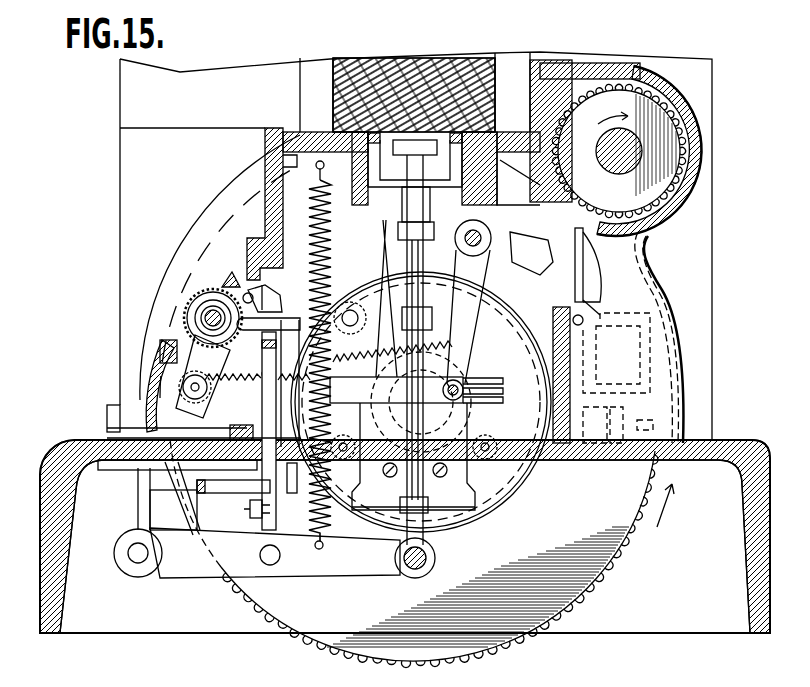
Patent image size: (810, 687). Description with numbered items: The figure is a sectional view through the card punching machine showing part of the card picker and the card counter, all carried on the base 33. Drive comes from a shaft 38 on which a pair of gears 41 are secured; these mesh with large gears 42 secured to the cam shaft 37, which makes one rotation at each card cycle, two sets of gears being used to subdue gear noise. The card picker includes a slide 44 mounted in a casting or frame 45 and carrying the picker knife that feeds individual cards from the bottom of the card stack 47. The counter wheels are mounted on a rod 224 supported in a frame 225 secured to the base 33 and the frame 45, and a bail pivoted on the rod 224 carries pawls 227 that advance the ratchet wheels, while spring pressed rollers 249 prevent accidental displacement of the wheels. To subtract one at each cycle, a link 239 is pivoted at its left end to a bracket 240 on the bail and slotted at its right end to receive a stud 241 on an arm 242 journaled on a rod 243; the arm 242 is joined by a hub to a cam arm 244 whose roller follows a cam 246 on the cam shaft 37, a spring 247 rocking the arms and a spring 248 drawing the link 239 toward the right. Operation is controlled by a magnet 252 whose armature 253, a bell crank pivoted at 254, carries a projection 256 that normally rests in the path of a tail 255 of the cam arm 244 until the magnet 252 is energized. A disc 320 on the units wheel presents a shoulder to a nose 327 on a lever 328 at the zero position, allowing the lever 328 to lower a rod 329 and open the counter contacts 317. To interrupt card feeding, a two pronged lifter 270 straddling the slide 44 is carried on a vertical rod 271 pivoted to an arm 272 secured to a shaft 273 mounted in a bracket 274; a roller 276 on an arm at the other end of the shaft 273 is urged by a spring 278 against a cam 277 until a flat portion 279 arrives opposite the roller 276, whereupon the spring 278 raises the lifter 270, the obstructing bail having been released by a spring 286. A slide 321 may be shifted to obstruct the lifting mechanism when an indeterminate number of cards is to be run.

The card stack 47 is at (333, 95).
The frame 45 is at (272, 150).
The frame 225 is at (248, 252).
The disc 320 is at (195, 303).
The rod 224 is at (198, 323).
The pawls 227 is at (172, 368).
The slide 321 is at (107, 418).
The spring pressed rollers 249 is at (257, 290).
The lever 328 is at (270, 312).
The nose 327 is at (250, 372).
The spring 286 is at (210, 387).
The bracket 240 is at (196, 402).
The bracket 274 is at (138, 503).
The shaft 273 is at (138, 560).
The rod 329 is at (300, 455).
The counter contacts 317 is at (250, 510).
The arm 272 is at (316, 572).
The roller 276 is at (436, 558).
The cam 277 is at (520, 480).
The large gears 42 is at (575, 592).
The base 33 is at (748, 505).
The pair of gears 41 is at (656, 192).
The shaft 38 is at (617, 164).
The cam arm 244 is at (540, 163).
The rod 243 is at (487, 230).
The projection 256 is at (575, 236).
The tail 255 is at (547, 262).
The armature 253 is at (600, 268).
The spring 247 is at (556, 318).
The pivot 254 is at (584, 322).
The magnet 252 is at (650, 352).
The arm 242 is at (470, 340).
The stud 241 is at (465, 380).
The cam shaft 37 is at (436, 410).
The link 239 is at (343, 395).
The flat portion 279 is at (343, 440).
The spring 248 is at (392, 358).
The cam 246 is at (383, 470).
The vertical rod 271 is at (452, 460).
The spring 278 is at (331, 282).
The two pronged lifter 270 is at (380, 183).
The slide 44 is at (392, 192).